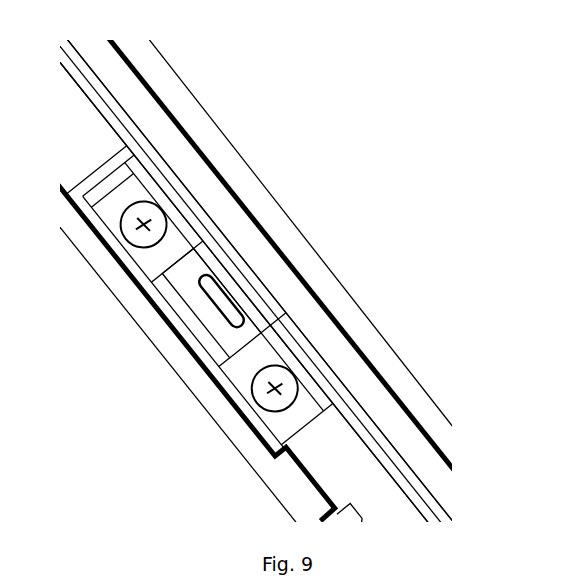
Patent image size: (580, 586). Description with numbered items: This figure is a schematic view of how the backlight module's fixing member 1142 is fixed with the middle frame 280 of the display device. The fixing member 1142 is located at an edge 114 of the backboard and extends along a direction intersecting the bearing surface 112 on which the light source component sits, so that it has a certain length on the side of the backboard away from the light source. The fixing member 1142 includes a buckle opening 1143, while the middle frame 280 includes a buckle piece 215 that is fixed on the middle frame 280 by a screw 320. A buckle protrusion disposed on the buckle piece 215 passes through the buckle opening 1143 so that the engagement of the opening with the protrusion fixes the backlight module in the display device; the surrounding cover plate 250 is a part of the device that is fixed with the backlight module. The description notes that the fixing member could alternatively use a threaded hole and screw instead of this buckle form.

The bearing surface 112 is at (248, 281).
The edge 114 is at (248, 281).
The buckle opening 1143 is at (304, 215).
The cover plate 250 is at (265, 285).
The fixing member 1142 is at (276, 290).
The buckle piece 215 is at (246, 300).
The middle frame 280 is at (253, 333).
The screw 320 is at (209, 348).